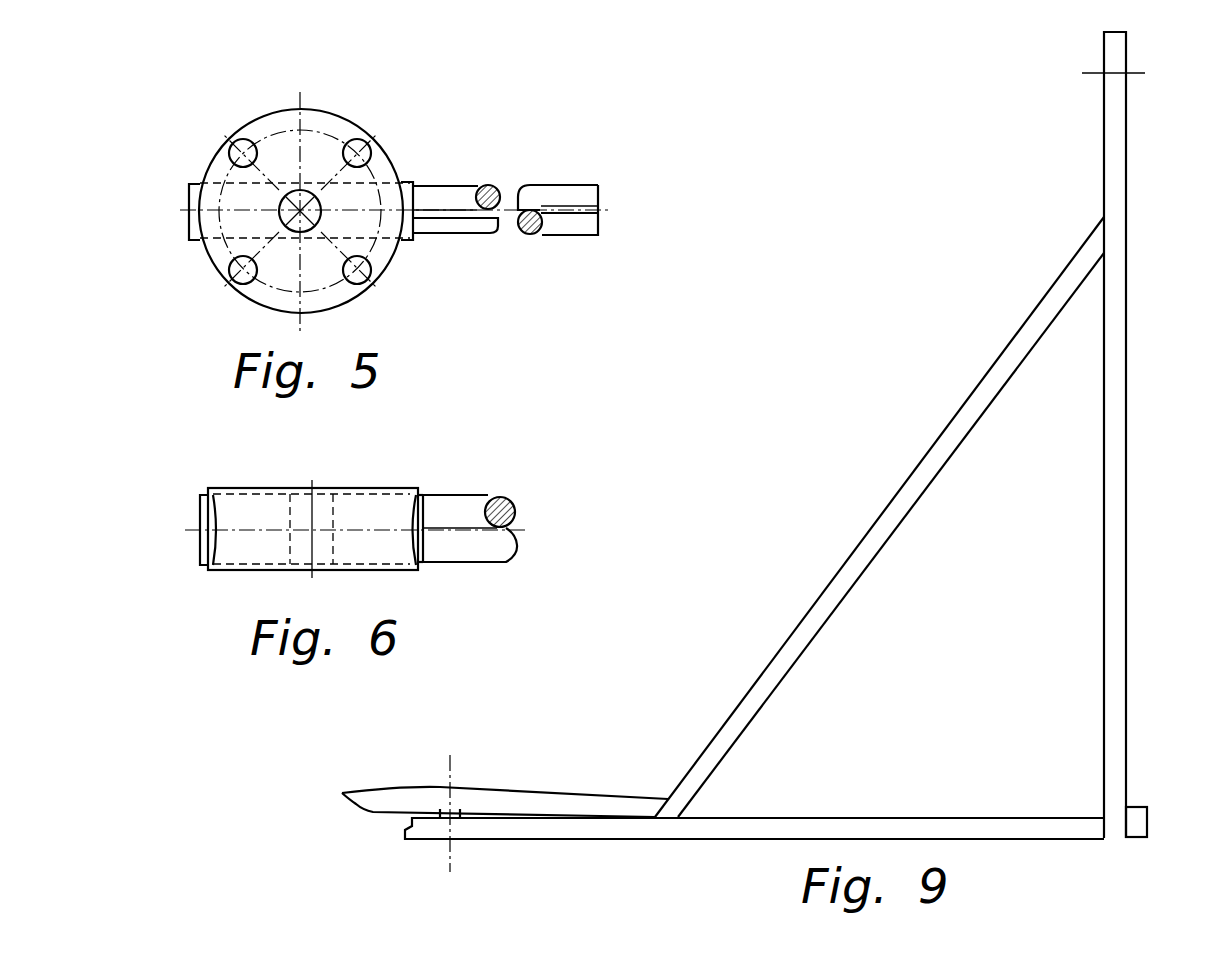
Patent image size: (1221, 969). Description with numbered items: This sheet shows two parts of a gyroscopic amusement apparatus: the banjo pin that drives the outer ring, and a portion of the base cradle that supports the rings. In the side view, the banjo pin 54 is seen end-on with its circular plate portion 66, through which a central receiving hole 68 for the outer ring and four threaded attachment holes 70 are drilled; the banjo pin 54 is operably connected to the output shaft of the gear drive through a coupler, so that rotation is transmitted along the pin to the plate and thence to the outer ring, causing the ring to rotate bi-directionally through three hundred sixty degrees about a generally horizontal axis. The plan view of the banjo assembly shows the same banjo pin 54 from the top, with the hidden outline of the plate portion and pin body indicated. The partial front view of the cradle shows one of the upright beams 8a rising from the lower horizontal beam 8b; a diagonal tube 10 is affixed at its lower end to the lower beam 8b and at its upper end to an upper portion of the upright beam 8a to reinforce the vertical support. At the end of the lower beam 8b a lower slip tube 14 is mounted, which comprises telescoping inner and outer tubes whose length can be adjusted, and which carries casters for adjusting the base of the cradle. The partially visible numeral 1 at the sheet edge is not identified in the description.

In FIG. 5, the circular plate portion 66 is at (310, 130).
In FIG. 5, the threaded attachment holes 70 is at (245, 153).
In FIG. 5, the receiving hole 68 is at (301, 205).
In FIG. 5, the banjo pin 54 is at (549, 193).
In FIG. 9, the upright beams 8a is at (1117, 522).
In FIG. 9, the lower horizontal beam 8b is at (1000, 828).
In FIG. 9, the diagonal tubes 10 is at (907, 500).
In FIG. 9, the lower slip tubes 14 is at (1140, 820).
In FIG. 9, the frame 1 is at (1151, 50).